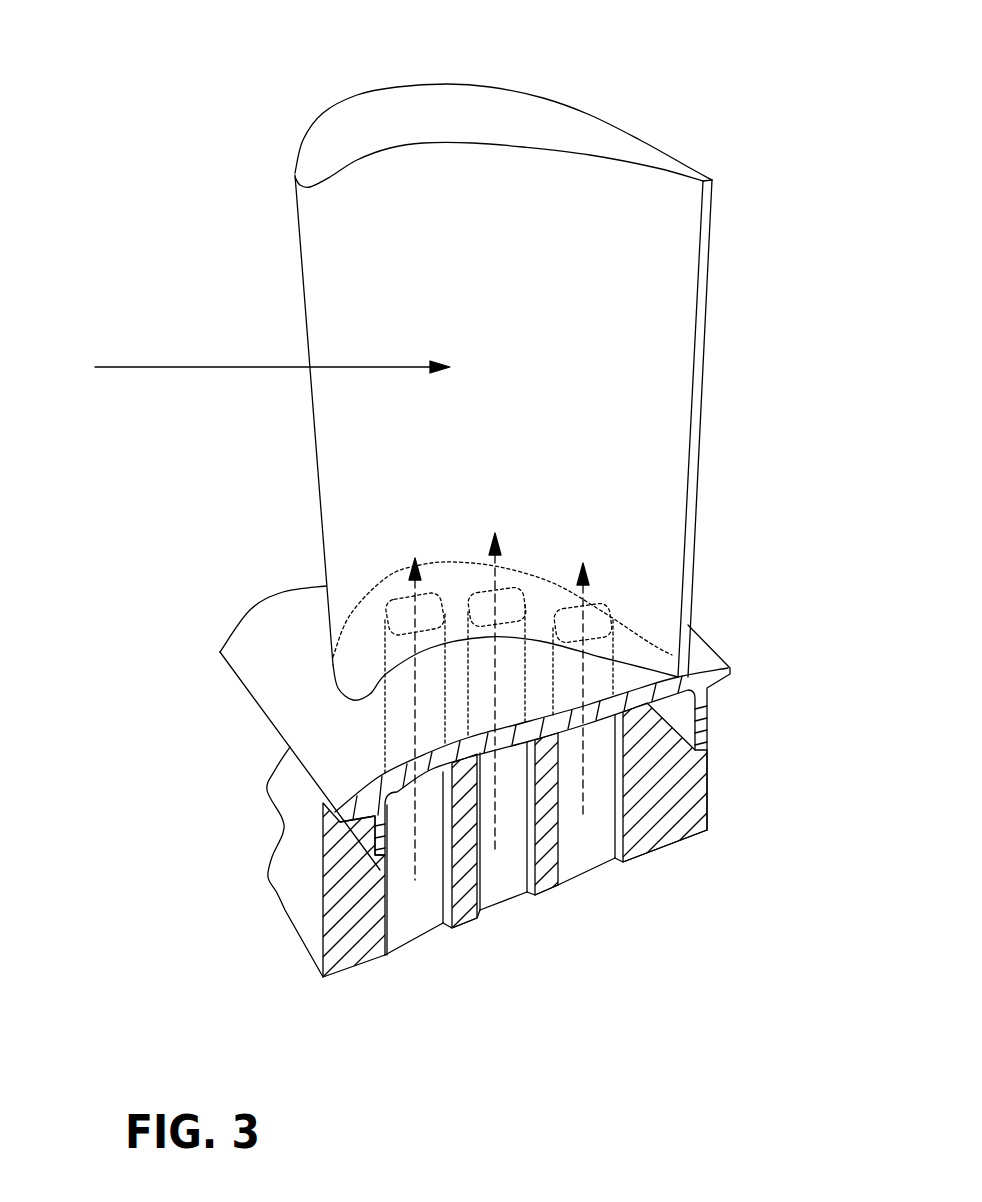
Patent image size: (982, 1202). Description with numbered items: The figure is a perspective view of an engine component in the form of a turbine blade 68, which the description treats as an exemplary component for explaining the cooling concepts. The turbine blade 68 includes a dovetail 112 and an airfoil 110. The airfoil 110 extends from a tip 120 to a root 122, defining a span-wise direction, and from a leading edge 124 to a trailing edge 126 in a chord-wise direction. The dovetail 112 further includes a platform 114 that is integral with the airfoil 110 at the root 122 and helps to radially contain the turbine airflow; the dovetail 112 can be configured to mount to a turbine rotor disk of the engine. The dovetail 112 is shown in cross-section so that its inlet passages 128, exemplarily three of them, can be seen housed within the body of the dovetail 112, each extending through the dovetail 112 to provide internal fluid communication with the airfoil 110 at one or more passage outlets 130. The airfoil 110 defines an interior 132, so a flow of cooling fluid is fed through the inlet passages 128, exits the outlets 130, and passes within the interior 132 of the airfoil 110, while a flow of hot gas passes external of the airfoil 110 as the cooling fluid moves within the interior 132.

The turbine blade 68 is at (170, 186).
The airfoil 110 is at (305, 467).
The dovetail 112 is at (307, 848).
The platform 114 is at (287, 685).
The tip 120 is at (388, 127).
The root 122 is at (647, 645).
The leading edge 124 is at (306, 312).
The trailing edge 126 is at (700, 418).
The inlet passages 128 is at (423, 960).
The passage outlets 130 is at (385, 598).
The interior 132 is at (543, 115).